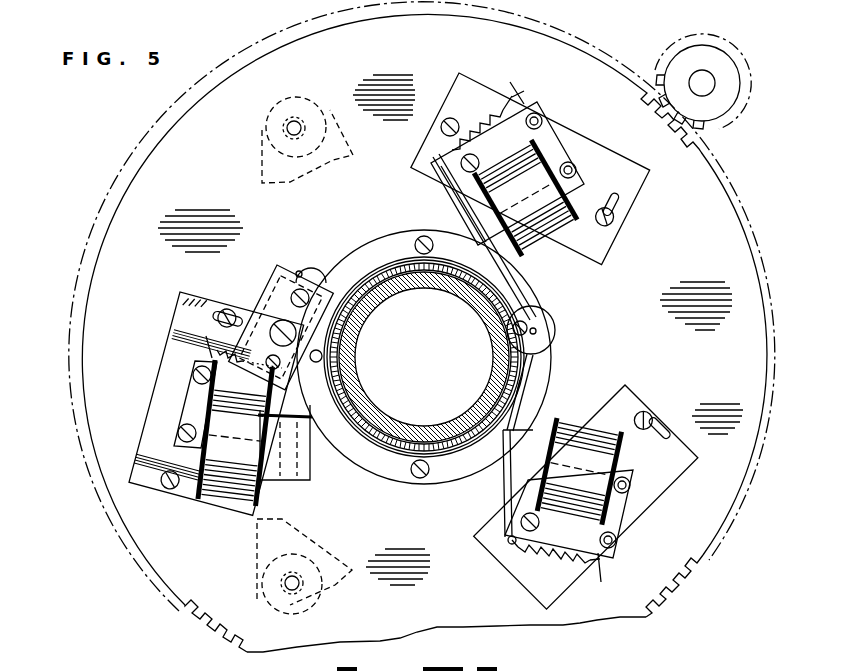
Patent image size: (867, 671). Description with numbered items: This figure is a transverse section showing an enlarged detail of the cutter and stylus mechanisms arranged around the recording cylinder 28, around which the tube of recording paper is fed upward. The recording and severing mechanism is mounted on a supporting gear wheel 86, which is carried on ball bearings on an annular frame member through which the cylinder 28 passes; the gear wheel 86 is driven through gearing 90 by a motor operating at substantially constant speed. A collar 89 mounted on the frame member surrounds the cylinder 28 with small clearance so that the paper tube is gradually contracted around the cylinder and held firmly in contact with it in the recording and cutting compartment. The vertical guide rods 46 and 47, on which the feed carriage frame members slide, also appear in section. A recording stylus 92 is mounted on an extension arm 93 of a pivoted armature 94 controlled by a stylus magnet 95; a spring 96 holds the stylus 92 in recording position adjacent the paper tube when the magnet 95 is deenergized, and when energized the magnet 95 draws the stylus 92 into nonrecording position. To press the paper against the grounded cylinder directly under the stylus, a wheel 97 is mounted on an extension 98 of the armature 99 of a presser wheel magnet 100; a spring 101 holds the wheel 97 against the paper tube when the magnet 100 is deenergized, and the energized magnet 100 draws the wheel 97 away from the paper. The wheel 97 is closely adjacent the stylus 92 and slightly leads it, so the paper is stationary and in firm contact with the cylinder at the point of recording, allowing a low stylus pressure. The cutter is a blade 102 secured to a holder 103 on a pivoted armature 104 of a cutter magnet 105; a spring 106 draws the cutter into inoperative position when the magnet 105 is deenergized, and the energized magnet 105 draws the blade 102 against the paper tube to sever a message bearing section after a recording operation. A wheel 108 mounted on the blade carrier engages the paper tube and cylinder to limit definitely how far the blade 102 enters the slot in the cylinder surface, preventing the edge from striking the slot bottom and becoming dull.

The recording cylinder 28 is at (381, 284).
The vertical guide rod 46 is at (295, 120).
The vertical guide rod 47 is at (292, 591).
The supporting gear wheel 86 is at (702, 558).
The collar 89 is at (382, 440).
The gearing 90 is at (728, 72).
The recording stylus 92 is at (548, 332).
The extension arm 93 is at (503, 270).
The pivoted armature 94 is at (453, 178).
The stylus magnet 95 is at (535, 168).
The spring 96 is at (488, 118).
The wheel 97 is at (552, 340).
The extension 98 is at (522, 393).
The armature 99 is at (520, 490).
The presser wheel magnet 100 is at (595, 445).
The spring 101 is at (562, 556).
The blade 102 is at (330, 265).
The holder 103 is at (268, 284).
The pivoted armature 104 is at (300, 433).
The cutter magnet 105 is at (227, 470).
The spring 106 is at (216, 351).
The wheel 108 is at (298, 270).